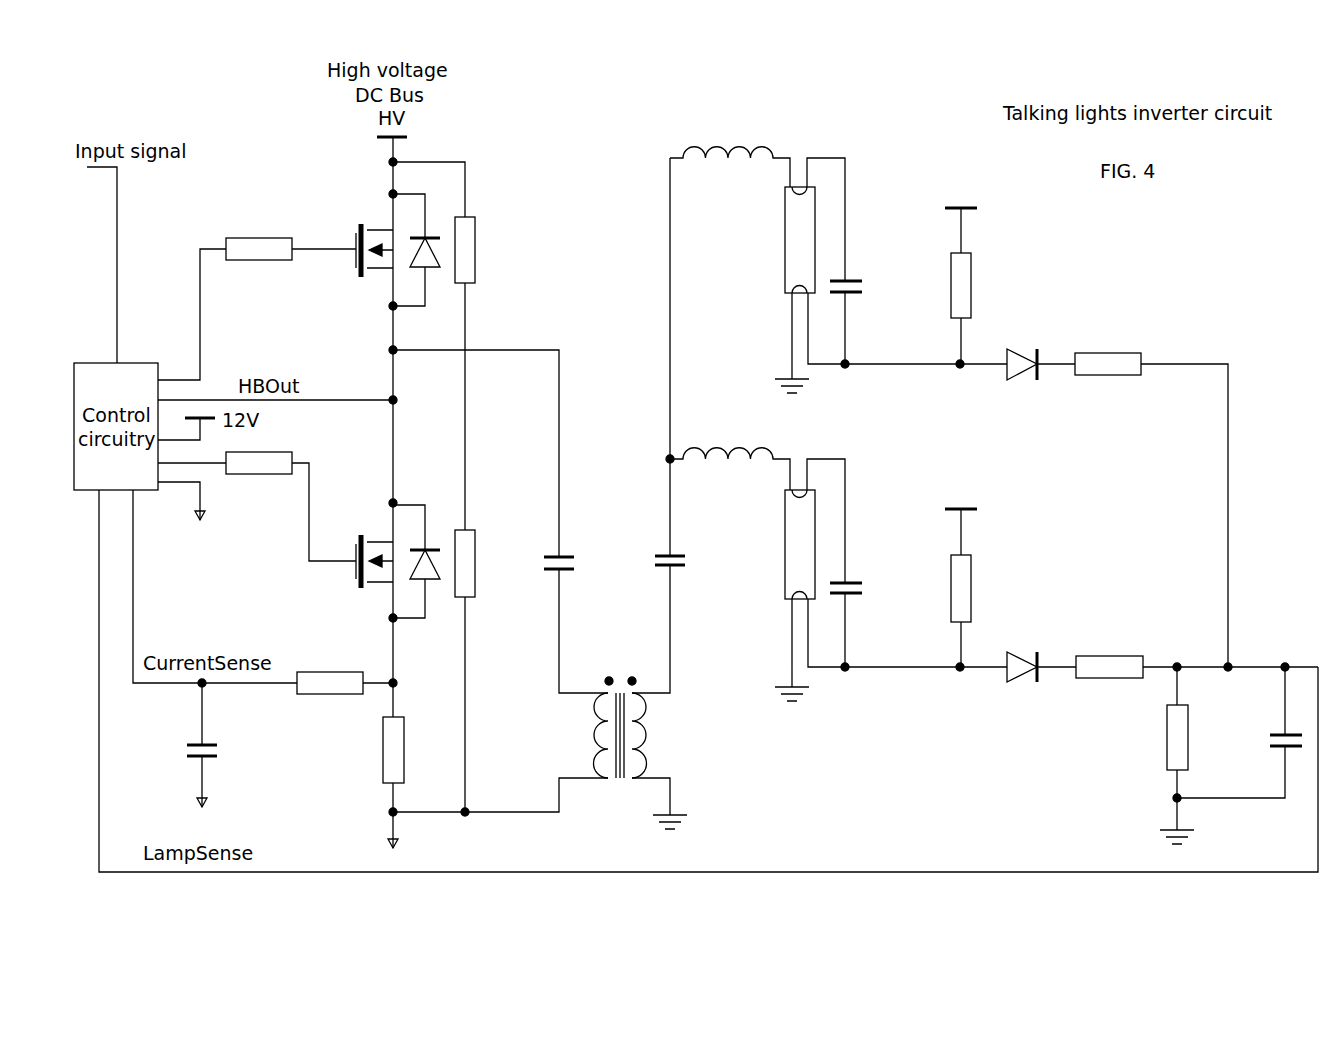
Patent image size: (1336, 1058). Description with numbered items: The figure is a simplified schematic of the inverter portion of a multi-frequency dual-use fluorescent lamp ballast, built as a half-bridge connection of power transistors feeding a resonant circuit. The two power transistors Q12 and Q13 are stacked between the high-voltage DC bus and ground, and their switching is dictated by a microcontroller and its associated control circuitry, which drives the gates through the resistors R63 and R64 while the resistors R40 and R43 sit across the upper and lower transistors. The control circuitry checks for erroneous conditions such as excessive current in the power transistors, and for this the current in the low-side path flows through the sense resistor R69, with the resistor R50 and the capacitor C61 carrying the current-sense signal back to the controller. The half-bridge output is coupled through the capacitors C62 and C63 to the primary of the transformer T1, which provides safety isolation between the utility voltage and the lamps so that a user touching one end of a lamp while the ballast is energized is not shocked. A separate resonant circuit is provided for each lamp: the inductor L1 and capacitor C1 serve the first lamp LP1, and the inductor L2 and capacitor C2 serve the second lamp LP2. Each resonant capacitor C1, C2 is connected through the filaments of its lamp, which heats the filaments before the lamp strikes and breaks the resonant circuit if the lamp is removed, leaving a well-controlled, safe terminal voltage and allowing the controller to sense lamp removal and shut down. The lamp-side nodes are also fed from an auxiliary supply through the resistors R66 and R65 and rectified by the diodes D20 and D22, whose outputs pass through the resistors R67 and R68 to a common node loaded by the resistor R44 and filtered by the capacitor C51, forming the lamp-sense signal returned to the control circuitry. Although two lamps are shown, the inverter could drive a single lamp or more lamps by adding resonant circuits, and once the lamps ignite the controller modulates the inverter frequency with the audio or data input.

The gate resistor 10 ohm R63 is at (291, 224).
The high-side MOSFET Q12 is at (387, 250).
The resistor 100k R40 is at (462, 346).
The gate resistor 10 ohm R64 is at (291, 506).
The low-side MOSFET Q13 is at (387, 561).
The resistor 100k R43 is at (493, 671).
The current sense resistor 1k R50 is at (330, 656).
The capacitor 100pF C61 is at (237, 745).
The sense resistor 0.47 ohm R69 is at (365, 750).
The film capacitor 1uF 250V C62 is at (522, 521).
The film capacitor 1uF 250V C63 is at (698, 425).
The transformer T1 is at (540, 753).
The resonant inductor L1 is at (730, 139).
The lamp 1 LP1 is at (863, 275).
The resonant capacitor C1 is at (881, 306).
The resistor 20k R66 is at (977, 271).
The diode 1N4148 D20 is at (1032, 394).
The resistor 270k R67 is at (1151, 483).
The resonant inductor L2 is at (730, 442).
The lamp 2 LP2 is at (863, 580).
The resonant capacitor C2 is at (881, 608).
The resistor 20k R65 is at (977, 573).
The diode 1N4148 D22 is at (1033, 695).
The resistor 270k R68 is at (1197, 638).
The resistor 100k R44 is at (1147, 755).
The capacitor 0.1uF C51 is at (1239, 732).